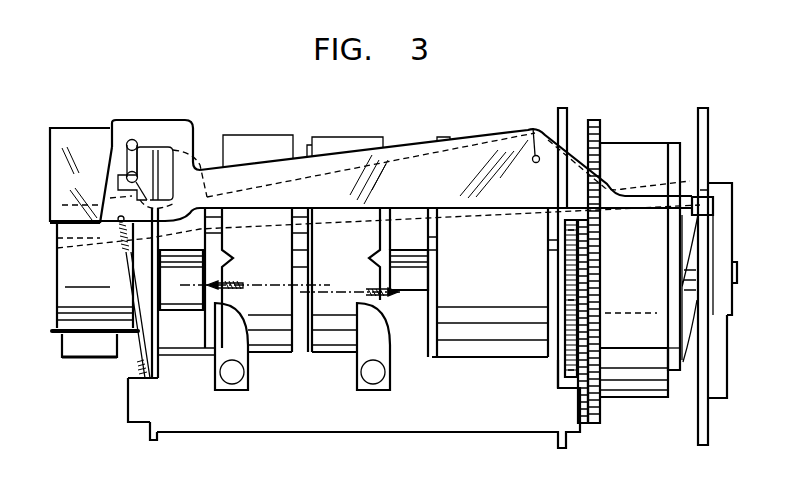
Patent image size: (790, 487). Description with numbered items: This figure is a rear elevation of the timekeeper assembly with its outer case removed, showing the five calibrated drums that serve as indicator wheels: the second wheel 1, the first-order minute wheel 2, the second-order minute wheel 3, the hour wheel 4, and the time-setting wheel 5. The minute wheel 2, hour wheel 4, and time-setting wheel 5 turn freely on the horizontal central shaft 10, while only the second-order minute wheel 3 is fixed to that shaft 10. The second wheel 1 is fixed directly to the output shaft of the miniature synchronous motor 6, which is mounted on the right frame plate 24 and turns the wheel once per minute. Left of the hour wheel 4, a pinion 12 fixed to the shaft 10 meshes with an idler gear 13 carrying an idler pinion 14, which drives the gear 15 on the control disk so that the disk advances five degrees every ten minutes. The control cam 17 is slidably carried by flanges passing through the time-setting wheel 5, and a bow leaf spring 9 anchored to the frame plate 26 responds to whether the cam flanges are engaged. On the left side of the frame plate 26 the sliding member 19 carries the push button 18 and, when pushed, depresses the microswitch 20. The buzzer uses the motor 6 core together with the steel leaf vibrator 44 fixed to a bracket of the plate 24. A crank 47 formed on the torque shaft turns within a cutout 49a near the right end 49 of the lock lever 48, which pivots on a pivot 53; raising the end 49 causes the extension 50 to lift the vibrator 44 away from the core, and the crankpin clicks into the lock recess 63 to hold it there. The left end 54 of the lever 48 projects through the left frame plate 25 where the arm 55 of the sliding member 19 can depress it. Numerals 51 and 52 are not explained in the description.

The second wheel 1 is at (186, 304).
The first-order minute wheel 2 is at (270, 340).
The second-order minute wheel 3 is at (332, 342).
The hour wheel 4 is at (481, 348).
The time-setting wheel 5 is at (633, 397).
The miniature synchronous motor 6 is at (97, 325).
The bow leaf spring 9 is at (695, 360).
The central shaft 10 is at (412, 272).
The pinion 12 is at (565, 283).
The idler gear 13 is at (564, 366).
The idler pinion 14 is at (599, 341).
The gear 15 is at (586, 257).
The control cam 17 is at (677, 158).
The push button 18 is at (738, 273).
The sliding member 19 is at (723, 198).
The microswitch 20 is at (718, 398).
The right frame plate 24 is at (150, 432).
The left frame plate 25 is at (567, 123).
The frame plate 26 is at (698, 437).
The leaf vibrator 44 is at (71, 137).
The crank 47 is at (146, 162).
The lock lever 48 is at (475, 150).
The right end 49 is at (123, 130).
The cutout 49a is at (178, 157).
The extension 50 is at (62, 205).
The hanger brackets 51 is at (215, 380).
The screw 52 is at (357, 293).
The pivot 53 is at (533, 128).
The left end 54 is at (690, 187).
The arm 55 is at (706, 183).
The lock recess 63 is at (126, 147).